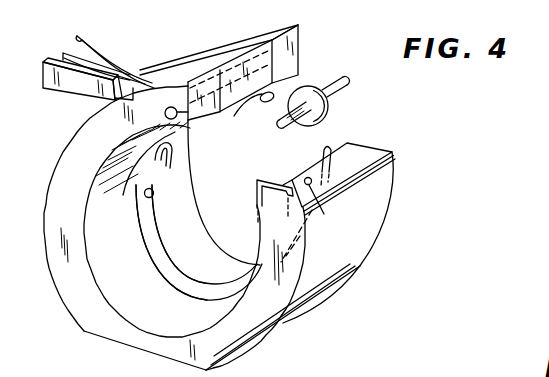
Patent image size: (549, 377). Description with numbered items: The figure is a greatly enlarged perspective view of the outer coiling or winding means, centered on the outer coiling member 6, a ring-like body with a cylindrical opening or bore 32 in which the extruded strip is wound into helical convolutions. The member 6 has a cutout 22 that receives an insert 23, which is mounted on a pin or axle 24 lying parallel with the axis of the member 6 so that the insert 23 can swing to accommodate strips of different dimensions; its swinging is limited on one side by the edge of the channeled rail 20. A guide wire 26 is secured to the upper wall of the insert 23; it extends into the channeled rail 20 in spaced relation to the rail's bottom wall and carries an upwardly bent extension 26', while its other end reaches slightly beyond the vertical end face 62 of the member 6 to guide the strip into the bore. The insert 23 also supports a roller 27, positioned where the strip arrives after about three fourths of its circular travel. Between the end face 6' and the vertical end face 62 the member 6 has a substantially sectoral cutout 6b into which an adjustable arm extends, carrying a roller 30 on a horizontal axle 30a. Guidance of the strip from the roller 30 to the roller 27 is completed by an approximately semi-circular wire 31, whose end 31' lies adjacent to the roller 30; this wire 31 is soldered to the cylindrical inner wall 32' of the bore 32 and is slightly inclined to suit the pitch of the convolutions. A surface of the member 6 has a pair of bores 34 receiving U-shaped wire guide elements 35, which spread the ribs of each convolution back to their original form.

The outer coiling member 6 is at (218, 228).
The end face 6' is at (345, 171).
The sectoral cutout 6b is at (263, 161).
The channeled rail 20 is at (77, 82).
The cutout 22 is at (122, 196).
The insert 23 is at (208, 58).
The pin or axle 24 is at (300, 62).
The guide wire 26 is at (220, 112).
The upwardly bent extension 26' is at (109, 58).
The roller 27 is at (162, 157).
The roller 30 is at (328, 110).
The horizontal axle 30a is at (346, 88).
The semi-circular wire 31 is at (186, 234).
The end of semi-circular wire 31' is at (343, 153).
The cylindrical opening or bore 32 is at (199, 239).
The cylindrical inner wall 32' is at (221, 192).
The bores 34 is at (302, 200).
The guide elements 35 is at (258, 207).
The vertical end face 62 is at (299, 40).